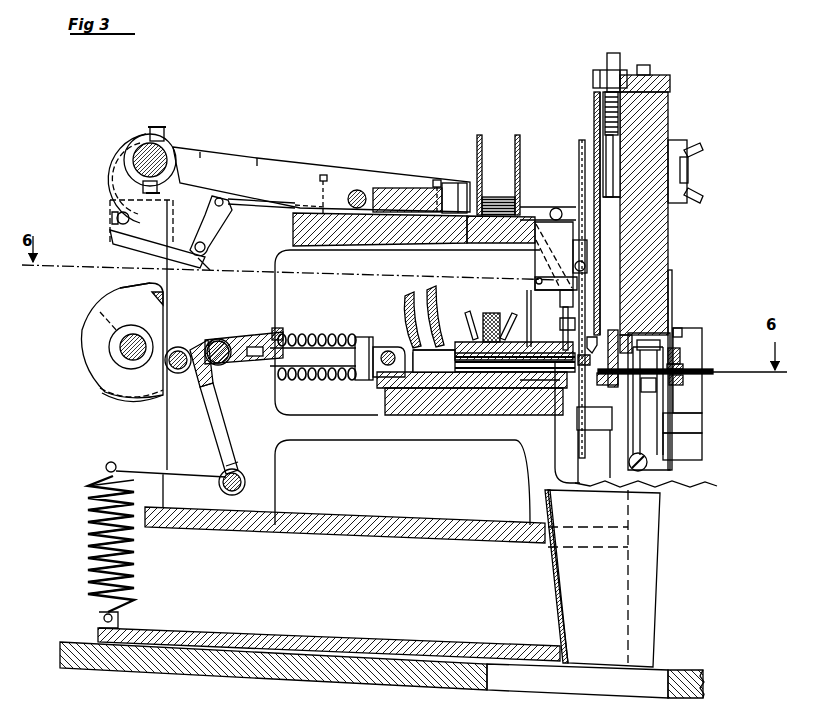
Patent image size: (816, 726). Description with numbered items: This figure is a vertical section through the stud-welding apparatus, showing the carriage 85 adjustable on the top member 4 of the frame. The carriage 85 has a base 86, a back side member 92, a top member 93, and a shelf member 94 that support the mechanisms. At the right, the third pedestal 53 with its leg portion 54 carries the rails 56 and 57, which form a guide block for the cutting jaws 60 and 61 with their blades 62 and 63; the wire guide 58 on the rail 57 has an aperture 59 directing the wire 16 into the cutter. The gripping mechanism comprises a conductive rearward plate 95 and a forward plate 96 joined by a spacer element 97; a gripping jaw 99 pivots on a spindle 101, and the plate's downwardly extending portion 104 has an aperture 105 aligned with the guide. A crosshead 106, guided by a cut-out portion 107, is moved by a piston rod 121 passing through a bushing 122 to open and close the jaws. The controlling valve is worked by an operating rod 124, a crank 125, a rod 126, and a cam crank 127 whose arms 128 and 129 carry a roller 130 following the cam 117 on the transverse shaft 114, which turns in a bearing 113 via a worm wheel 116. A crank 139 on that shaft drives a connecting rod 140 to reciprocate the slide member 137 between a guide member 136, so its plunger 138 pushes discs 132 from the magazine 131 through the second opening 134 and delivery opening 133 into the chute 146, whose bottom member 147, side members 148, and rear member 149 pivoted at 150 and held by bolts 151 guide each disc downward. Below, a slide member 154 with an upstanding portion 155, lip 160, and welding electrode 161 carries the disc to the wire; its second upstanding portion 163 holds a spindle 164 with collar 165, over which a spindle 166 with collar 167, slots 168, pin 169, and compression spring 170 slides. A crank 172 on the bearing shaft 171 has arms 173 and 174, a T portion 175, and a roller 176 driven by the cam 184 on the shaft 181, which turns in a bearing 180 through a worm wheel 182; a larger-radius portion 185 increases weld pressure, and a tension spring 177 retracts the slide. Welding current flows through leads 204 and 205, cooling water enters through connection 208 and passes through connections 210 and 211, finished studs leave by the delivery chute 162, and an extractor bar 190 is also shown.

The top member 4 is at (418, 680).
The wire 16 is at (716, 374).
The third pedestal 53 is at (700, 424).
The leg portion 54 is at (705, 476).
The rail 56 is at (598, 402).
The rail 57 is at (700, 340).
The wire guide 58 is at (683, 382).
The aperture 59 is at (683, 368).
The upper movable jaw 60 is at (646, 345).
The lower movable jaw 61 is at (646, 440).
The cutting blade 62 is at (676, 355).
The cutting blade 63 is at (648, 386).
The carriage 85 is at (130, 437).
The base 86 is at (268, 636).
The back side member 92 is at (276, 489).
The top member 93 is at (336, 243).
The shelf member 94 is at (466, 405).
The rearward plate 95 is at (668, 233).
The forward plate 96 is at (603, 123).
The spacer element 97 is at (670, 82).
The gripping jaw 99 is at (606, 253).
The spindle 101 is at (672, 282).
The downwardly extending portion 104 is at (655, 330).
The aperture 105 is at (594, 418).
The crosshead 106 is at (594, 136).
The cut-out portion 107 is at (628, 166).
The bearing 113 is at (117, 214).
The transverse shaft 114 is at (106, 160).
The worm wheel 116 is at (98, 180).
The cam 117 is at (130, 150).
The piston rod 121 is at (620, 57).
The bushing 122 is at (600, 72).
The operating rod 124 is at (579, 146).
The crank 125 is at (578, 158).
The rod 126 is at (270, 210).
The cam crank 127 is at (207, 262).
The arm 128 is at (212, 230).
The arm 129 is at (166, 243).
The roller 130 is at (120, 232).
The magazine 131 is at (477, 143).
The disc 132 is at (497, 195).
The delivery opening 133 is at (554, 208).
The second opening 134 is at (468, 220).
The guide member 136 is at (360, 190).
The slide member 137 is at (402, 188).
The plunger 138 is at (457, 205).
The crank 139 is at (178, 150).
The connecting rod 140 is at (264, 170).
The chute 146 is at (535, 272).
The bottom member 147 is at (535, 263).
The side member 148 is at (540, 302).
The rear member 149 is at (565, 338).
The pivot 150 is at (527, 284).
The adjustable bolt 151 is at (540, 294).
The slide member 154 is at (428, 390).
The upstanding portion 155 is at (492, 372).
The lip 160 is at (612, 375).
The welding electrode 161 is at (528, 415).
The delivery chute 162 is at (650, 593).
The second upstanding portion 163 is at (380, 376).
The spindle 164 is at (330, 346).
The collar 165 is at (370, 336).
The spindle 166 is at (221, 340).
The collar 167 is at (279, 328).
The slot 168 is at (253, 345).
The pin 169 is at (258, 358).
The coiled compression spring 170 is at (306, 368).
The bearing shaft 171 is at (246, 480).
The crank 172 is at (233, 466).
The arm 173 is at (215, 415).
The arm 174 is at (182, 477).
The T portion 175 is at (197, 346).
The roller 176 is at (178, 374).
The coiled tension spring 177 is at (86, 548).
The bearing 180 is at (152, 377).
The transverse shaft 181 is at (121, 345).
The worm wheel 182 is at (112, 394).
The cam 184 is at (86, 352).
The cam portion 185 is at (137, 289).
The extractor bar 190 is at (604, 335).
The lead 204 is at (688, 170).
The lead 205 is at (488, 313).
The connection 208 is at (700, 148).
The connection 210 is at (407, 298).
The connection 211 is at (428, 290).